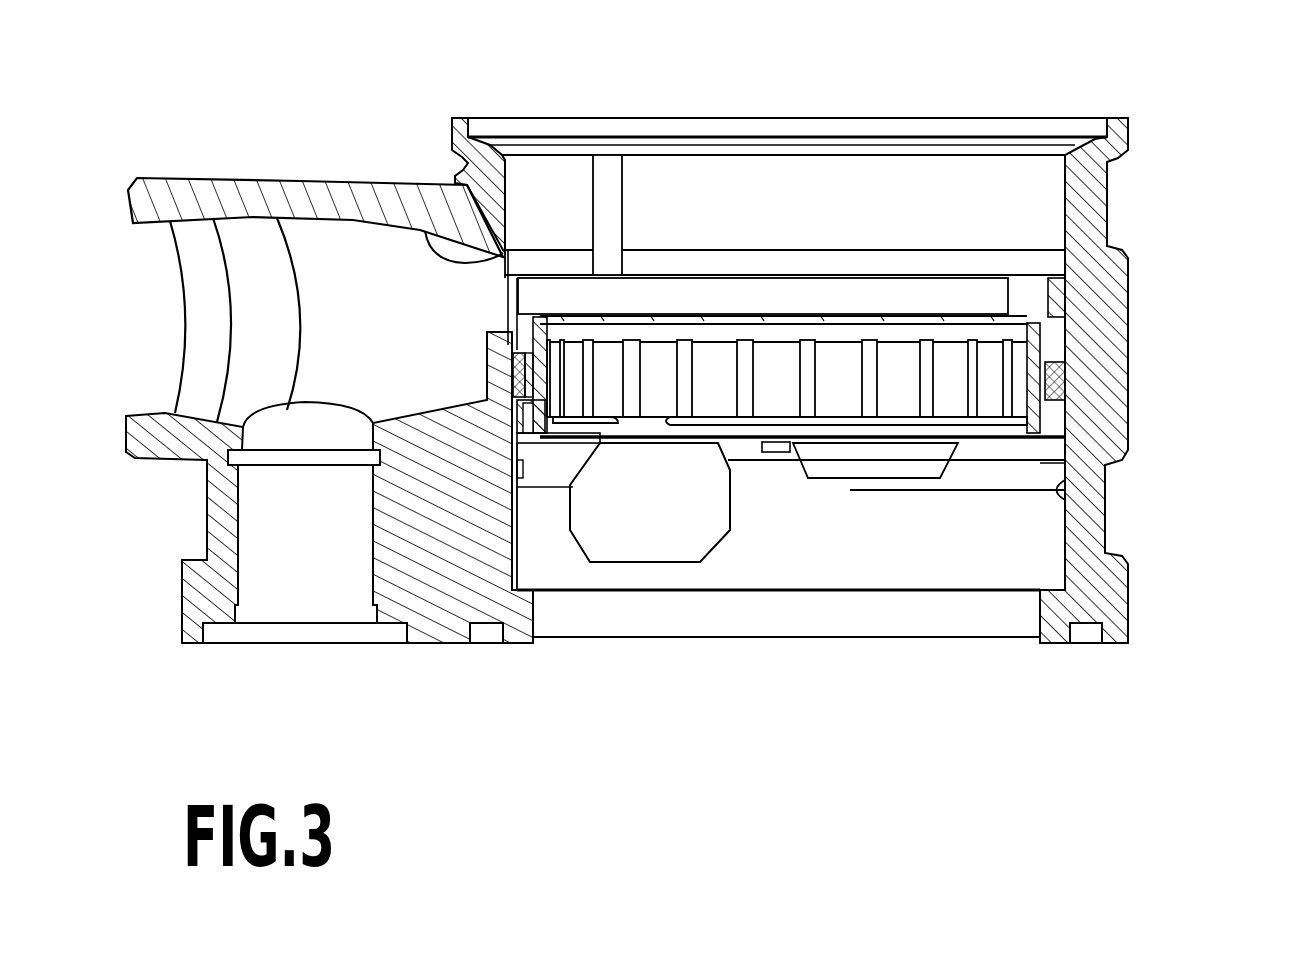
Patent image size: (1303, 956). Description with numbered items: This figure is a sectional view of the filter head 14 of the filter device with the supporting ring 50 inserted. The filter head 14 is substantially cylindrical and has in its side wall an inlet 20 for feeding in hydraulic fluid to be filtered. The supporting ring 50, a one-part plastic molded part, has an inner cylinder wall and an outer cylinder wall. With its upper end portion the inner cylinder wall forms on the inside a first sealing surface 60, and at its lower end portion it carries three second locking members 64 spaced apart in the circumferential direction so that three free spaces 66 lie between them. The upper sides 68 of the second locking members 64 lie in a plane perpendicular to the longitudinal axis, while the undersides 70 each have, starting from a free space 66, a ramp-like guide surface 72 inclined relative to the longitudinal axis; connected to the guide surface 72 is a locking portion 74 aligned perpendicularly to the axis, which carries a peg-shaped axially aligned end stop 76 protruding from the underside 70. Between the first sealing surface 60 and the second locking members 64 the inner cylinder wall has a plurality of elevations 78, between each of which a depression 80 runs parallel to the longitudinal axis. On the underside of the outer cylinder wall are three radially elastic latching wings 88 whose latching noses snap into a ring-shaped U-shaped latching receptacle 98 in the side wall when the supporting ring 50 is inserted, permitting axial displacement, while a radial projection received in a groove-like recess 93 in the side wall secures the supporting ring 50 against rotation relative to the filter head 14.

The filter head 14 is at (1112, 197).
The inlet 20 is at (420, 232).
The supporting ring 50 is at (543, 295).
The recess 93 is at (607, 180).
The first sealing surface 60 is at (652, 332).
The elevations 78 is at (763, 373).
The depression 80 is at (870, 373).
The upper sides 68 is at (1050, 386).
The latching receptacle 98 is at (520, 500).
The latching wings 88 is at (535, 467).
The second locking members 64 is at (583, 422).
The free spaces 66 is at (683, 440).
The guide surface 72 is at (635, 430).
The locking portion 74 is at (748, 440).
The end stop 76 is at (775, 452).
The undersides 70 is at (965, 432).